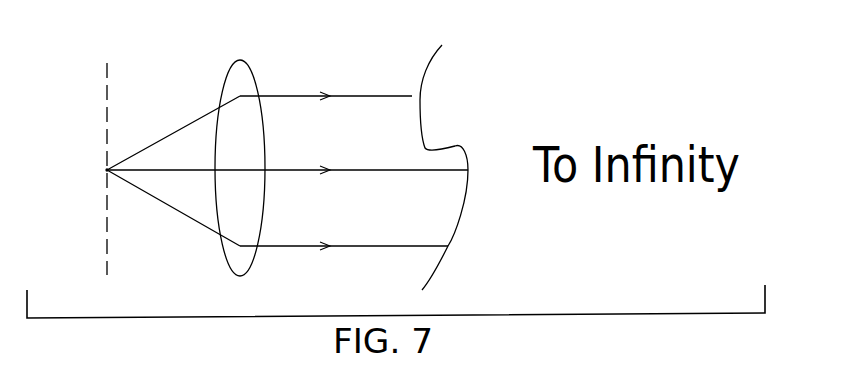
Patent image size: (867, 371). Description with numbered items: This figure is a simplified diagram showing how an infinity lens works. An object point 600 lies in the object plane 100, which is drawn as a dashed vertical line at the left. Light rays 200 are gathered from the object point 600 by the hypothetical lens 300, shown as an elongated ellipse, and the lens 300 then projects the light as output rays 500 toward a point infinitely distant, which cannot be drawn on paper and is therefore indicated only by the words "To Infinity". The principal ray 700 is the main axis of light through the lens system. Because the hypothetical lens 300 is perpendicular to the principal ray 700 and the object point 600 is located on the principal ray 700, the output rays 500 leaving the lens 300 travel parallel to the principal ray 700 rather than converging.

The object plane 100 is at (107, 82).
The light rays 200 is at (202, 114).
The hypothetical lens 300 is at (235, 85).
The output light rays 500 is at (412, 96).
The object point 600 is at (107, 171).
The principal ray 700 is at (403, 169).